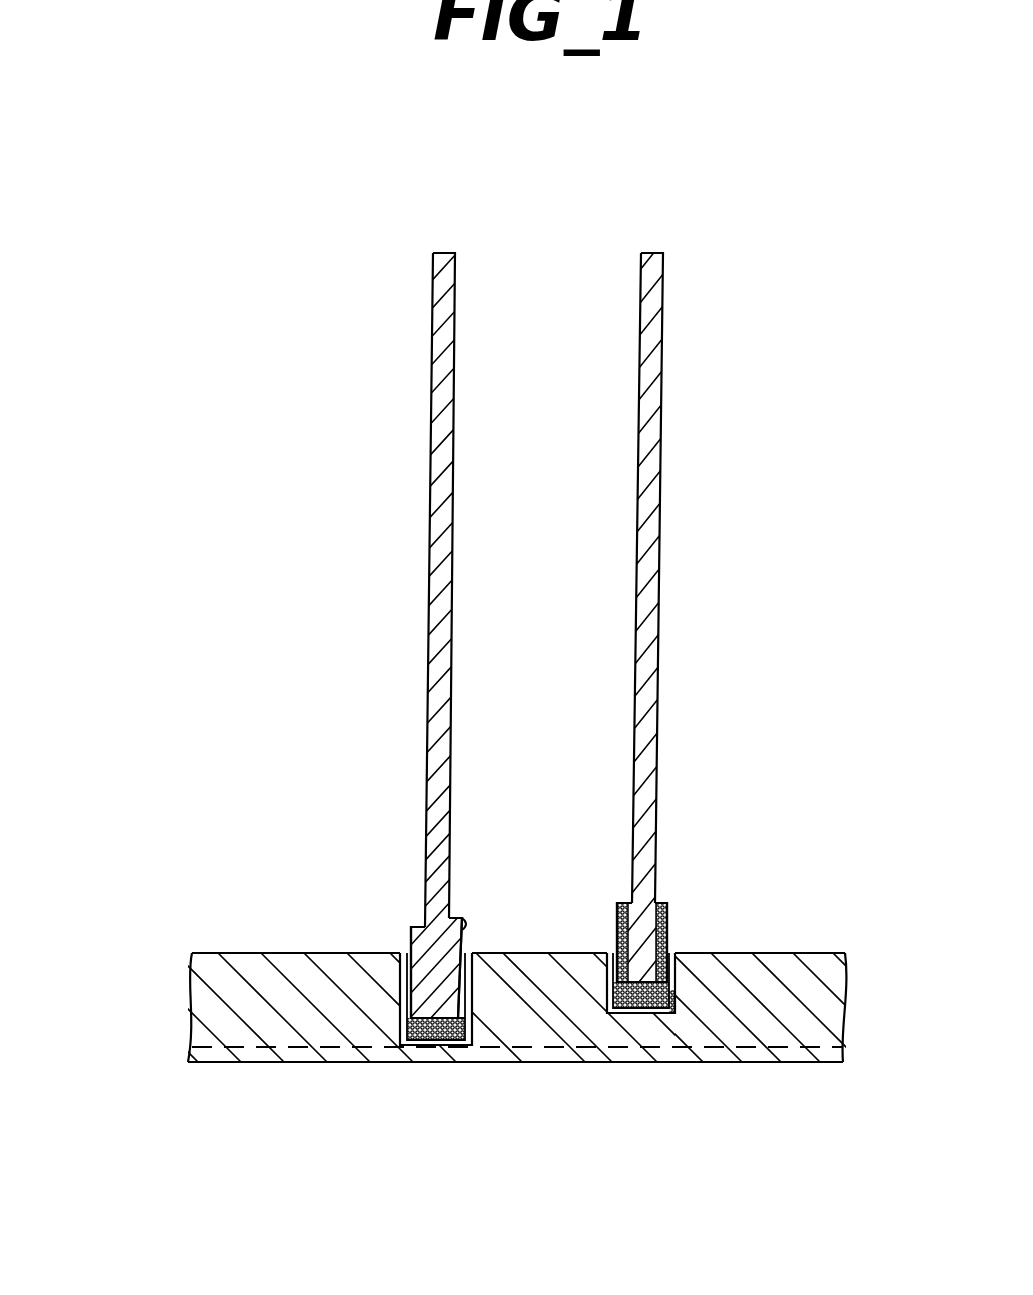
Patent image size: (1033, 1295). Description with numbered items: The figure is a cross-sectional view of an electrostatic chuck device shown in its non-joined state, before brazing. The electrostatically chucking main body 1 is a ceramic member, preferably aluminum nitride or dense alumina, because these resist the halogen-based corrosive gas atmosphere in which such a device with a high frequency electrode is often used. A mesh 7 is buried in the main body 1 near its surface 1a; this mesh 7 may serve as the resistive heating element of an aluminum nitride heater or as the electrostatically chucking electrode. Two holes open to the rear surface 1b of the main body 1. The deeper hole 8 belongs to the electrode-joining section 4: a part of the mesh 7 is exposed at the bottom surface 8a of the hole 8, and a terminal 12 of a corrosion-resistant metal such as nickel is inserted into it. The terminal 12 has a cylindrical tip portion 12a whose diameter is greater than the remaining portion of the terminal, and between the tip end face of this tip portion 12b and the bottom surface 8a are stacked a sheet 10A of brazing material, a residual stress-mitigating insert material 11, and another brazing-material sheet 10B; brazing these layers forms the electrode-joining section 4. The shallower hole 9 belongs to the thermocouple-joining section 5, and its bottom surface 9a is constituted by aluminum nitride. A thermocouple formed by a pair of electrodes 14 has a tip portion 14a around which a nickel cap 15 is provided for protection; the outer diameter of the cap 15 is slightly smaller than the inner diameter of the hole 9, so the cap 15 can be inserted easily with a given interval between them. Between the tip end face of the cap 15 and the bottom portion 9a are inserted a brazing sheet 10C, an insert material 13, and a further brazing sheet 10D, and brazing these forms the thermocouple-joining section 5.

The electrostatically chucking main body 1 is at (192, 985).
The surface 1a is at (247, 1063).
The rear surface 1b is at (210, 952).
The electrode-joining section 4 is at (414, 903).
The thermocouple-joining section 5 is at (668, 890).
The mesh 7 is at (817, 1047).
The hole 8 is at (400, 995).
The bottom surface of hole 8a is at (470, 1028).
The hole 9 is at (668, 943).
The bottom surface of hole 9a is at (672, 1000).
The sheet 10A is at (436, 1035).
The sheet 10B is at (457, 930).
The sheet 10C is at (635, 1000).
The sheet 10D is at (676, 1000).
The residual stress-mitigating insert material 11 is at (452, 1010).
The terminal 12 is at (452, 369).
The cylindrical tip portion 12a is at (405, 965).
The tip portion 12b is at (415, 1020).
The insert material 13 is at (605, 1008).
The pair of electrodes 14 is at (645, 328).
The tip portion of thermocouple 14a is at (618, 907).
The cap 15 is at (618, 930).